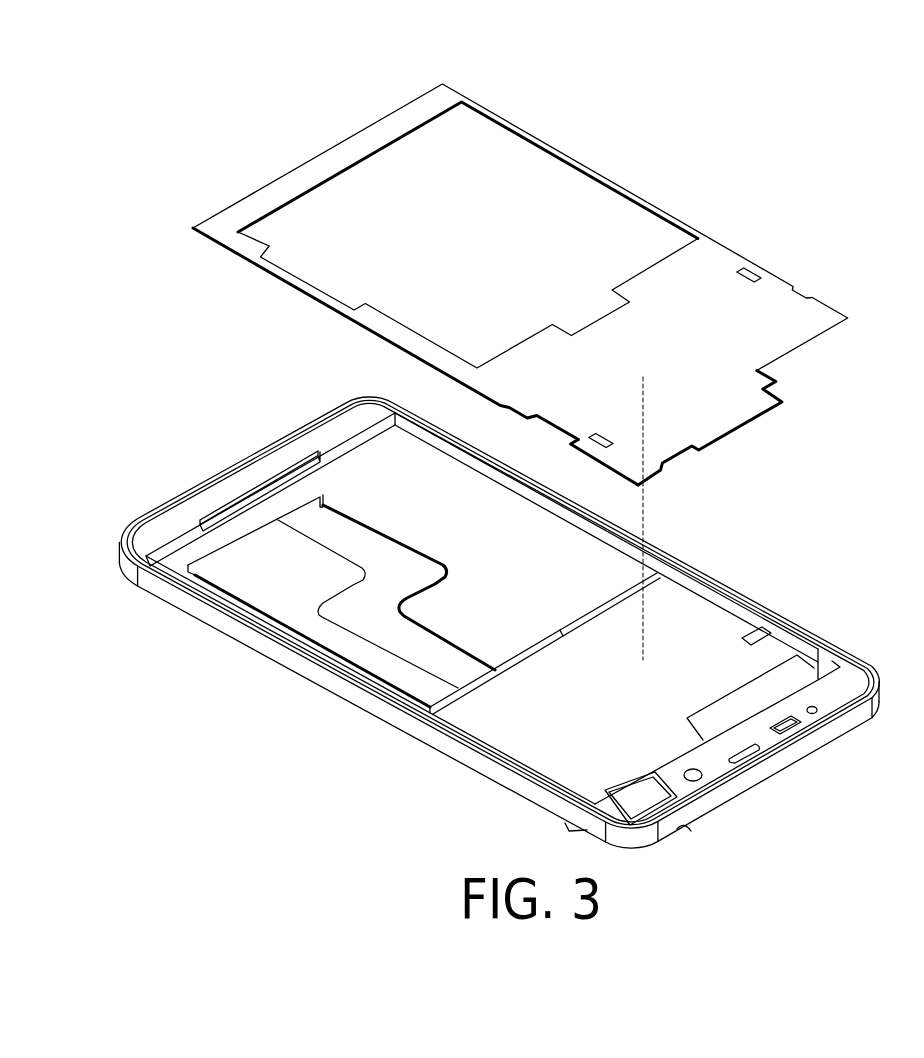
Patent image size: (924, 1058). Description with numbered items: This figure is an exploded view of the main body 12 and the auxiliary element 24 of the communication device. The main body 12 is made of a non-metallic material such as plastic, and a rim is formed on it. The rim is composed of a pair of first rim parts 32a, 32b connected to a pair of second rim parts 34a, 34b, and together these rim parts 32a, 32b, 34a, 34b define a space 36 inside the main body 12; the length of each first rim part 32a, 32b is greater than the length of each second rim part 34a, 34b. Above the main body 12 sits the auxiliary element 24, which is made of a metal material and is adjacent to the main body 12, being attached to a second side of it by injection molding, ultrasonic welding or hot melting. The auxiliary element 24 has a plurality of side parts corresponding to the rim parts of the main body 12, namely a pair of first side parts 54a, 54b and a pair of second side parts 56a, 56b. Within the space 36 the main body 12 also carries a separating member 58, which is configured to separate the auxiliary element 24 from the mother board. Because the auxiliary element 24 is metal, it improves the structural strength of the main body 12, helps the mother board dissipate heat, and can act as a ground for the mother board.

The main body 12 is at (499, 622).
The auxiliary element 24 is at (827, 228).
The first rim part 32a is at (303, 673).
The first rim part 32b is at (733, 590).
The second rim part 34a is at (772, 772).
The second rim part 34b is at (240, 460).
The space 36 is at (560, 752).
The first side part 54a is at (328, 307).
The first side part 54b is at (645, 200).
The second side part 56a is at (752, 425).
The second side part 56b is at (335, 142).
The separating member 58 is at (488, 620).